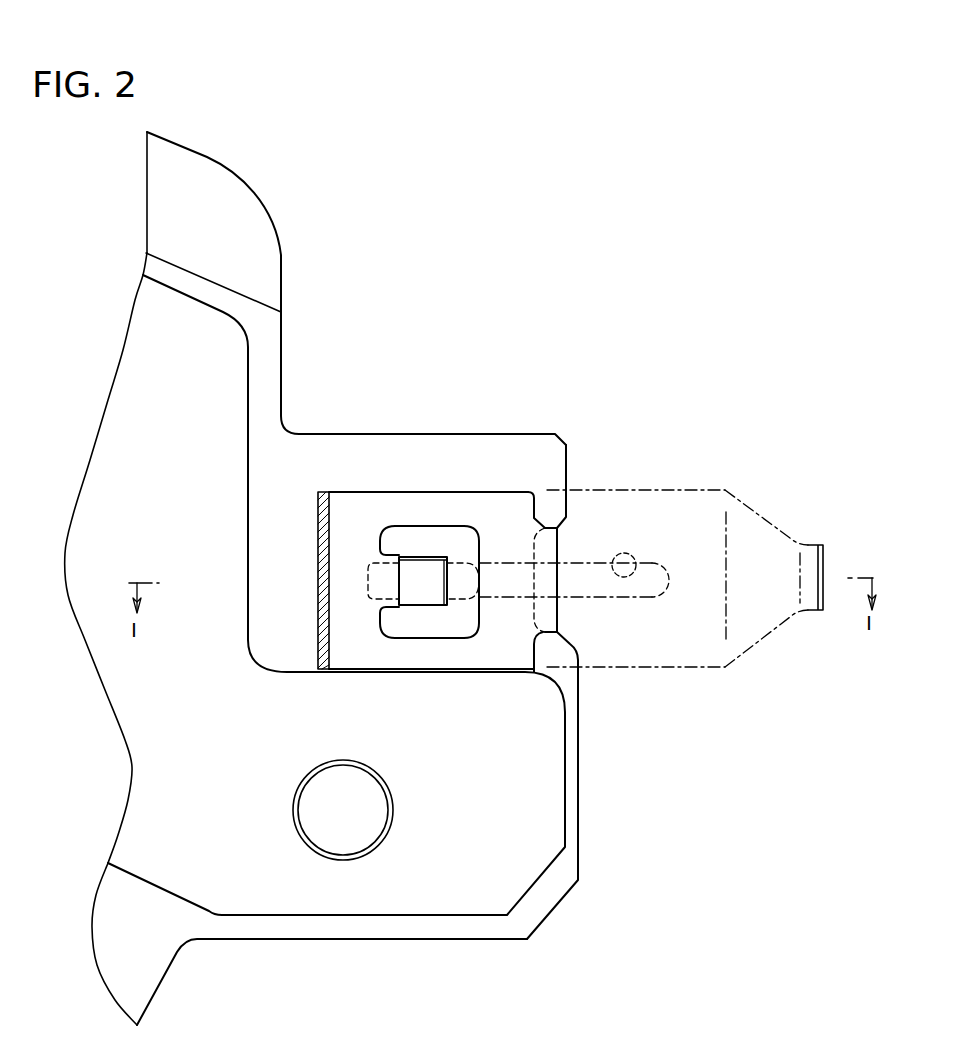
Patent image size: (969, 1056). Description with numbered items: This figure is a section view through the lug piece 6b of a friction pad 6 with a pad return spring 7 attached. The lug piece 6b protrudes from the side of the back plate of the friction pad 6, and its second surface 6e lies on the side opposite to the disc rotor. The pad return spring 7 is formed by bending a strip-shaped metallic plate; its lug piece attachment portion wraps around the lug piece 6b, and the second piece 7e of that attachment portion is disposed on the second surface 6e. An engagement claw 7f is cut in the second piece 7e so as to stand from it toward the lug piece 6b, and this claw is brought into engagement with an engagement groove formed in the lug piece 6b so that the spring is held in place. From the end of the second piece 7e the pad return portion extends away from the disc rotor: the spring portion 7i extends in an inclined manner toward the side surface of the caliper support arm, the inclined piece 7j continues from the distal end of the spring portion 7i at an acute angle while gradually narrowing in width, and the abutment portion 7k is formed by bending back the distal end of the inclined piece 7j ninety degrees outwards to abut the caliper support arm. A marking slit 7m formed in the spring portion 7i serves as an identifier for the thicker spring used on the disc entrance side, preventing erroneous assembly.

The friction pad 6 is at (288, 200).
The second surface 6e is at (422, 443).
The lug piece 6b is at (341, 950).
The pad return spring 7 is at (548, 551).
The second piece 7e is at (497, 497).
The engagement claw 7f is at (425, 597).
The spring portion 7i is at (647, 495).
The inclined piece 7j is at (762, 525).
The abutment portion 7k is at (820, 610).
The marking slit 7m is at (633, 555).